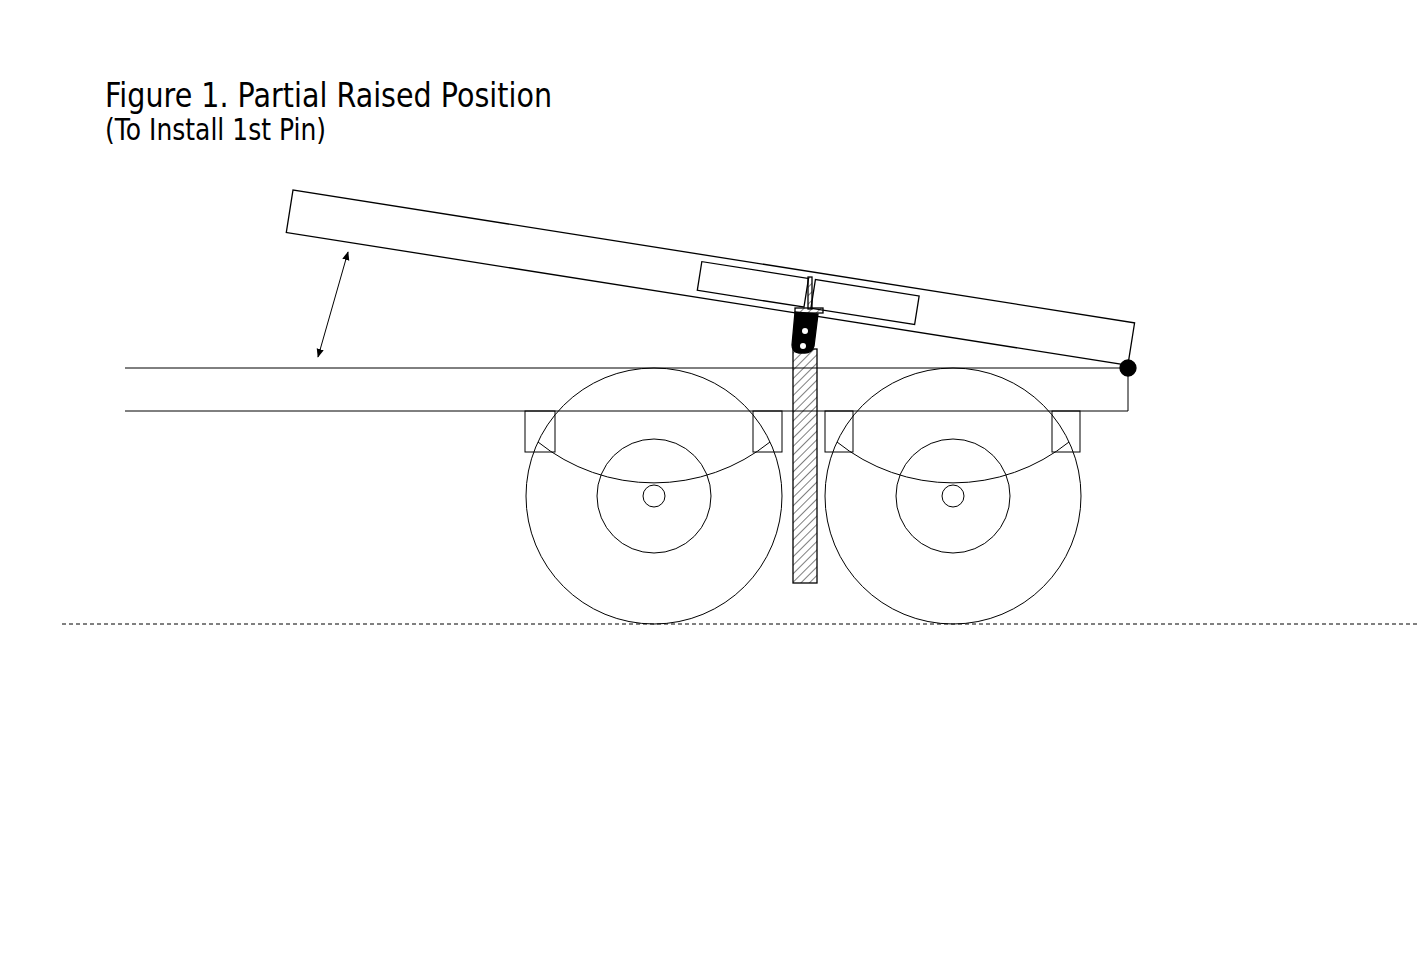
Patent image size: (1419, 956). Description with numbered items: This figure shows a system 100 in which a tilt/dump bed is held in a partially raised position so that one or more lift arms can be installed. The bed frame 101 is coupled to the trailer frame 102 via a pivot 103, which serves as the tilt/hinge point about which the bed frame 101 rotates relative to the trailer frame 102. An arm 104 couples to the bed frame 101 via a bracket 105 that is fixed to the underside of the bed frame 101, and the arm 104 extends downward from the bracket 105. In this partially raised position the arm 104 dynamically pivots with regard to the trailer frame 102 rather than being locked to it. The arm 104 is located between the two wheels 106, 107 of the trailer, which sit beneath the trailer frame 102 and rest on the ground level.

The system 100 is at (1228, 87).
The bed frame 101 is at (441, 227).
The trailer frame 102 is at (193, 402).
The pivot 103 is at (1256, 369).
The arm 104 is at (812, 545).
The bracket 105 is at (900, 277).
The wheel 106 is at (935, 603).
The wheel 107 is at (628, 603).